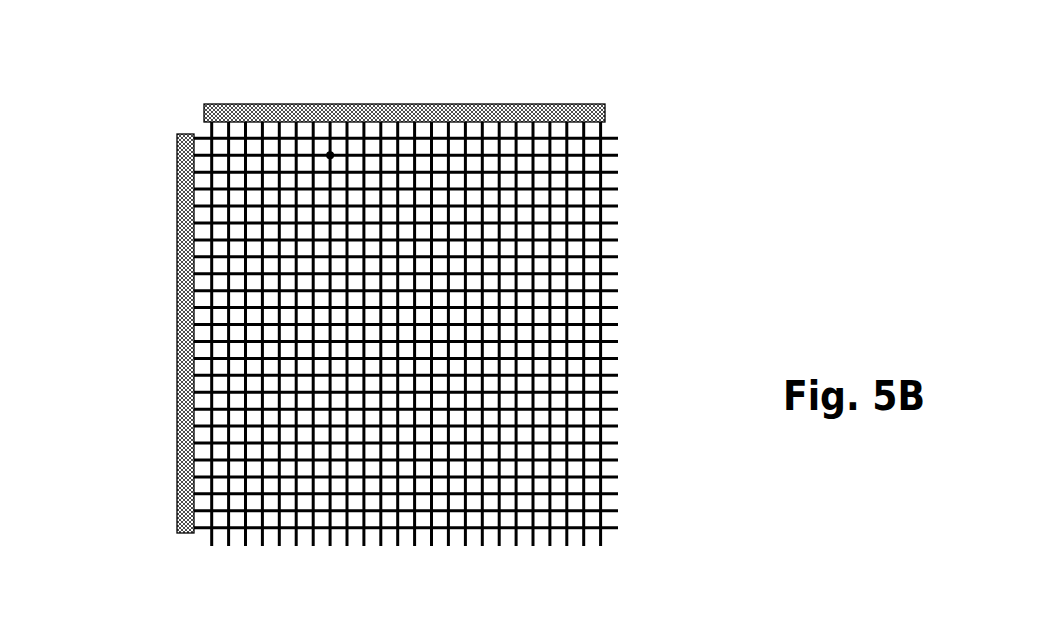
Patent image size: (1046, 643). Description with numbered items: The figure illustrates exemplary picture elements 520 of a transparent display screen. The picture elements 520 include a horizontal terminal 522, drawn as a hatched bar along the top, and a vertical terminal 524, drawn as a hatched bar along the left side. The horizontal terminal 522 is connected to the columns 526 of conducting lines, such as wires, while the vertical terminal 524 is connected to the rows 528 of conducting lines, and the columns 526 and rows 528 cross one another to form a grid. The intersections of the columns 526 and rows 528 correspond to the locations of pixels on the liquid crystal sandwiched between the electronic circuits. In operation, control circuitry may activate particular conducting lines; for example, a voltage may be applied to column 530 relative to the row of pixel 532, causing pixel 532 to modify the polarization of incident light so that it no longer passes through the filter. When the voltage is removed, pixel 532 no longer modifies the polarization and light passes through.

The picture elements 520 is at (135, 78).
The horizontal terminal 522 is at (405, 116).
The vertical terminal 524 is at (188, 332).
The columns 526 is at (212, 555).
The rows 528 is at (633, 138).
The column 530 is at (329, 132).
The pixel 532 is at (298, 155).